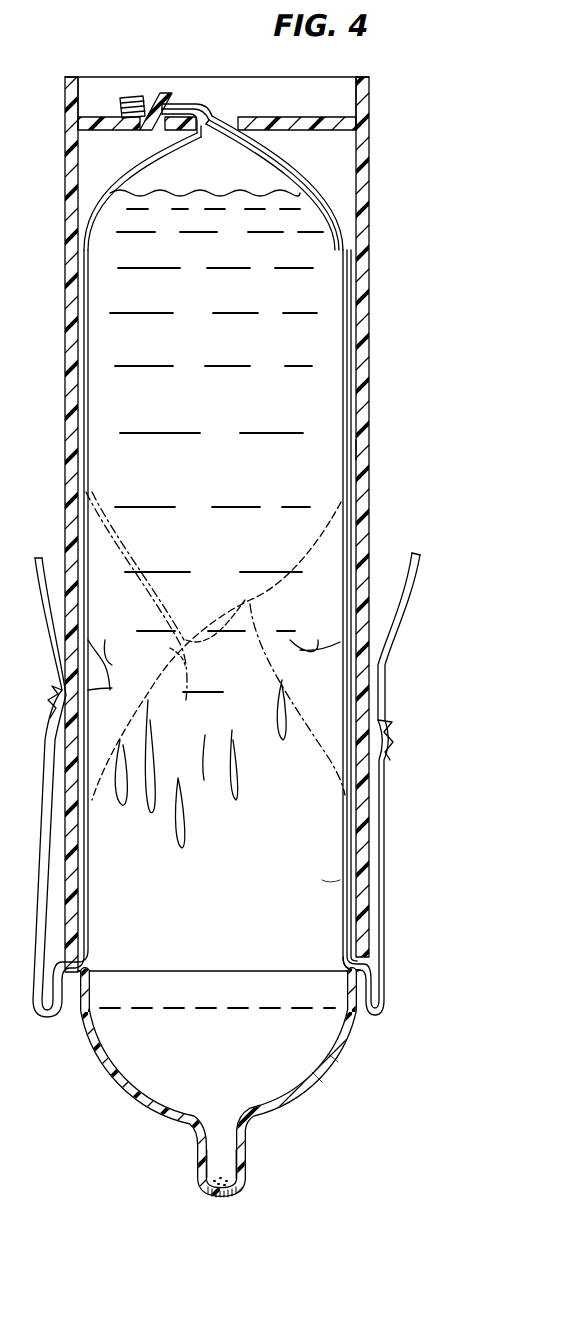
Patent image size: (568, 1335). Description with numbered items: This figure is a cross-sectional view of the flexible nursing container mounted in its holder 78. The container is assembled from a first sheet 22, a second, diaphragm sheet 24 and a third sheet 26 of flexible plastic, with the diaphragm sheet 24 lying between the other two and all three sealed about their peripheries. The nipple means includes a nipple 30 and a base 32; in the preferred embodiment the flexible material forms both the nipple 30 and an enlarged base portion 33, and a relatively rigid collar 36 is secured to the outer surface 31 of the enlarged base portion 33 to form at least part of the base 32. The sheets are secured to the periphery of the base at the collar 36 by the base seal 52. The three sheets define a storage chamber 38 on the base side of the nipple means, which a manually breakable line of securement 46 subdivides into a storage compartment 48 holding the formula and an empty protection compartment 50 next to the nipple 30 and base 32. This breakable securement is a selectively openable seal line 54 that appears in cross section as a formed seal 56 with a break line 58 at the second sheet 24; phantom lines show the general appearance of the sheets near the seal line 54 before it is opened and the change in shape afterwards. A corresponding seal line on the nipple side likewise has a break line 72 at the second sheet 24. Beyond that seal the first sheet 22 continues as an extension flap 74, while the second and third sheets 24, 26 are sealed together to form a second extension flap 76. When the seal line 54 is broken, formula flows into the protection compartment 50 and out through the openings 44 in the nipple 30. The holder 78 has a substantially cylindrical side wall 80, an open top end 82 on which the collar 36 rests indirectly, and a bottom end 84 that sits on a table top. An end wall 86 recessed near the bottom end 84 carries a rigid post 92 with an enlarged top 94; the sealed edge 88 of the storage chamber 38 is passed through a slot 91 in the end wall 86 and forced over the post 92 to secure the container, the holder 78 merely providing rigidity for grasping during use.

The first sheet 22 is at (72, 300).
The second, diaphragm sheet 24 is at (350, 272).
The third sheet 26 is at (352, 318).
The nipple 30 is at (245, 1172).
The outer surface of the enlarged base portion 31 is at (322, 1082).
The base 32 is at (350, 1040).
The enlarged base portion 33 is at (338, 1062).
The collar 36 is at (372, 1012).
The storage chamber 38 is at (320, 483).
The openings 44 is at (234, 1196).
The manually breakable line of securement 46 is at (345, 245).
The storage compartment 48 is at (318, 410).
The protection compartment 50 is at (322, 880).
The base seal 52 is at (373, 990).
The selectively openable seal line 54 is at (178, 652).
The formed seal 56 is at (108, 688).
The break line 58 is at (105, 665).
The break line 72 is at (55, 690).
The extension flap 74 is at (38, 558).
The second extension flap 76 is at (395, 600).
The holder 78 is at (370, 364).
The side wall 80 is at (364, 452).
The open top end 82 is at (382, 956).
The bottom end 84 is at (369, 80).
The end wall 86 is at (325, 125).
The sealed edge 88 is at (197, 110).
The slot 91 is at (232, 122).
The rigid post 92 is at (133, 98).
The enlarged top 94 is at (158, 98).